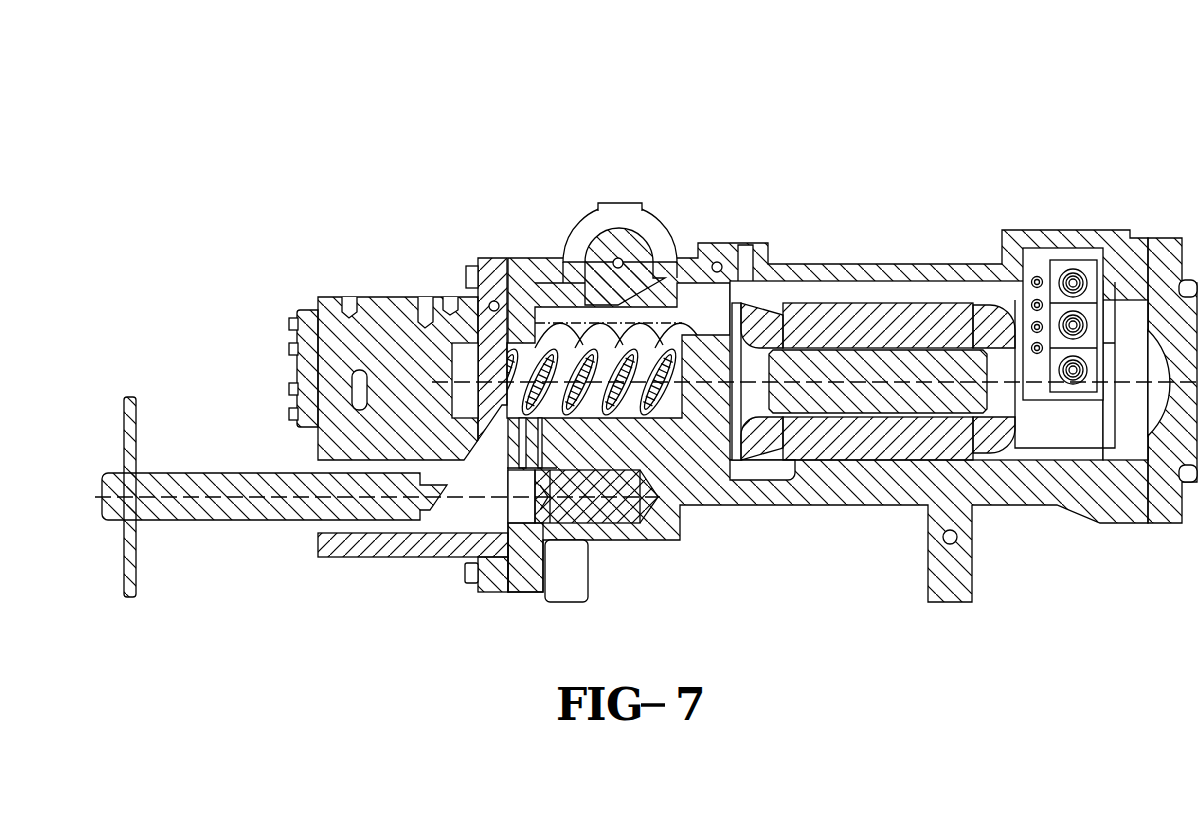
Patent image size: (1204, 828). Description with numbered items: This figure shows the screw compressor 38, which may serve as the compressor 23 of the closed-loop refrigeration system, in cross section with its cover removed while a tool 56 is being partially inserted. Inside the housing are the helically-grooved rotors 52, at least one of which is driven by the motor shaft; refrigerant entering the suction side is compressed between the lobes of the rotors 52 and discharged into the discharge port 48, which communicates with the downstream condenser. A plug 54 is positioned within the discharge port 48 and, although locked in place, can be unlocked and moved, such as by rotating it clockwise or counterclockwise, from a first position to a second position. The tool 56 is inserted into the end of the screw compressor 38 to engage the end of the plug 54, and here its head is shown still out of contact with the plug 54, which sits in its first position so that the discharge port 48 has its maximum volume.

The screw compressor 38 is at (290, 148).
The compressor 23 is at (394, 558).
The discharge port 48 is at (520, 515).
The helically-grooved rotors 52 is at (580, 337).
The plug 54 is at (600, 503).
The tool 56 is at (222, 490).